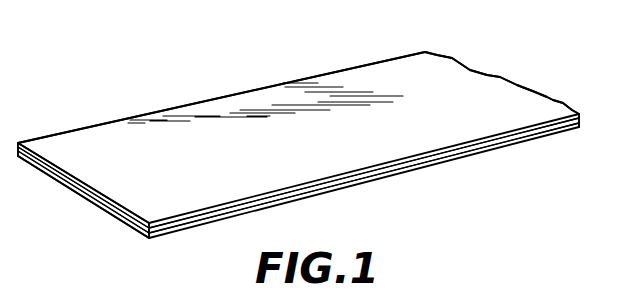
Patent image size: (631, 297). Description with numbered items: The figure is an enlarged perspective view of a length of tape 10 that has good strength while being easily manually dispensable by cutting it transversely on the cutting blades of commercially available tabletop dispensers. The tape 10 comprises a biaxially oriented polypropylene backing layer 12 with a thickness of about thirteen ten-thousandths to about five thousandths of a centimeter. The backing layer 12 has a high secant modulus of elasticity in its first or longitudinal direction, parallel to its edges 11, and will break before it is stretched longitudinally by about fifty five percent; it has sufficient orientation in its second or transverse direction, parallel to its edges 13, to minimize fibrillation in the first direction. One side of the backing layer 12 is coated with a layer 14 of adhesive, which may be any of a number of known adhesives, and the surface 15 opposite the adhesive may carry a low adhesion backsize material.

The tape 10 is at (346, 13).
The edges 11 is at (387, 203).
The backing layer 12 is at (210, 237).
The edges 13 is at (495, 42).
The layer of adhesive 14 is at (245, 153).
The surface 15 is at (480, 182).